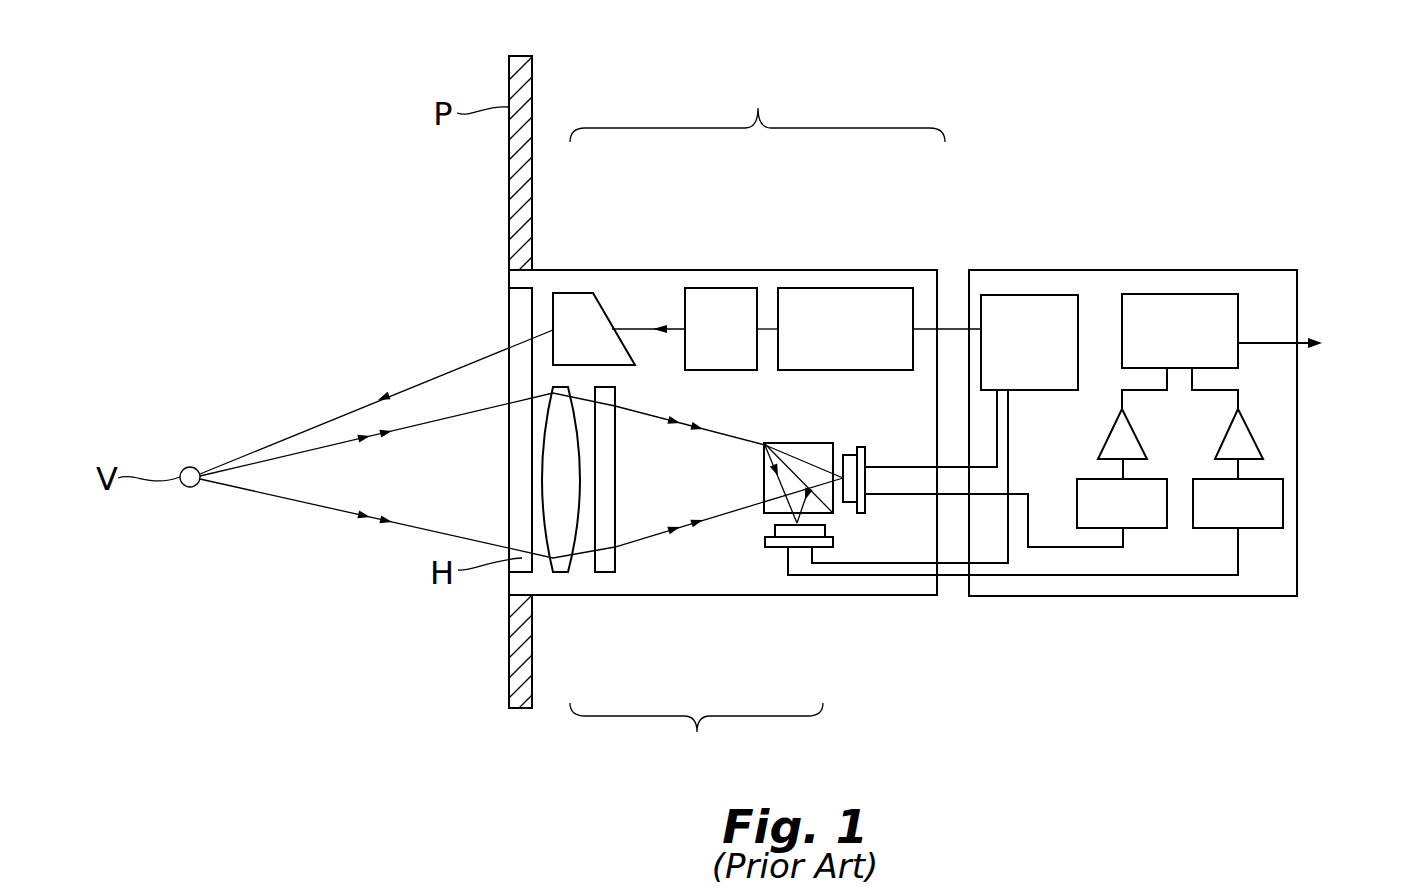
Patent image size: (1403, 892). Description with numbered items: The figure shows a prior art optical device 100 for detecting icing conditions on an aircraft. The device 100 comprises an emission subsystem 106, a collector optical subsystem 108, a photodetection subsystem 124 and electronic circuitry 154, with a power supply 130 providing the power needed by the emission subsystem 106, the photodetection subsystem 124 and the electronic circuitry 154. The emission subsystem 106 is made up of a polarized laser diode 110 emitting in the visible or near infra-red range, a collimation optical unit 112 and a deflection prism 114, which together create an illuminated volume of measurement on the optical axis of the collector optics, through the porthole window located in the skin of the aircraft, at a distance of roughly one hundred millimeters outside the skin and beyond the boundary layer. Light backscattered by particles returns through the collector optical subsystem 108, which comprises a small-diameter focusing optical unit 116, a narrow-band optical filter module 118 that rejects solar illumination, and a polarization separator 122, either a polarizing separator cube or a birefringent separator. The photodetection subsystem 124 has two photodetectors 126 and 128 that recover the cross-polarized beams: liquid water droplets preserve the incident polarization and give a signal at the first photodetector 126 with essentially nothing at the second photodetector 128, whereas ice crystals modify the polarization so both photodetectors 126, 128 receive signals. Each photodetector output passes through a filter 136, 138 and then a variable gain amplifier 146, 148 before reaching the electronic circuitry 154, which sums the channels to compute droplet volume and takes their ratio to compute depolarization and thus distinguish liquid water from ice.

The optical device 100 is at (1270, 66).
The emission subsystem 106 is at (757, 105).
The collector optical subsystem 108 is at (696, 737).
The polarized laser diode 110 is at (855, 288).
The collimation optical unit 112 is at (735, 288).
The deflection prism 114 is at (608, 293).
The focusing optical unit 116 is at (560, 572).
The narrow-band optical filter module 118 is at (605, 572).
The polarization separator 122 is at (768, 517).
The photodetection subsystem 124 is at (965, 626).
The first photodetector 126 is at (783, 530).
The second photodetector 128 is at (856, 447).
The power supply 130 is at (1040, 295).
The first filter 136 is at (1260, 528).
The second filter 138 is at (1137, 528).
The first variable gain amplifier 146 is at (1255, 430).
The second variable gain amplifier 148 is at (1110, 428).
The electronic circuitry 154 is at (1197, 294).